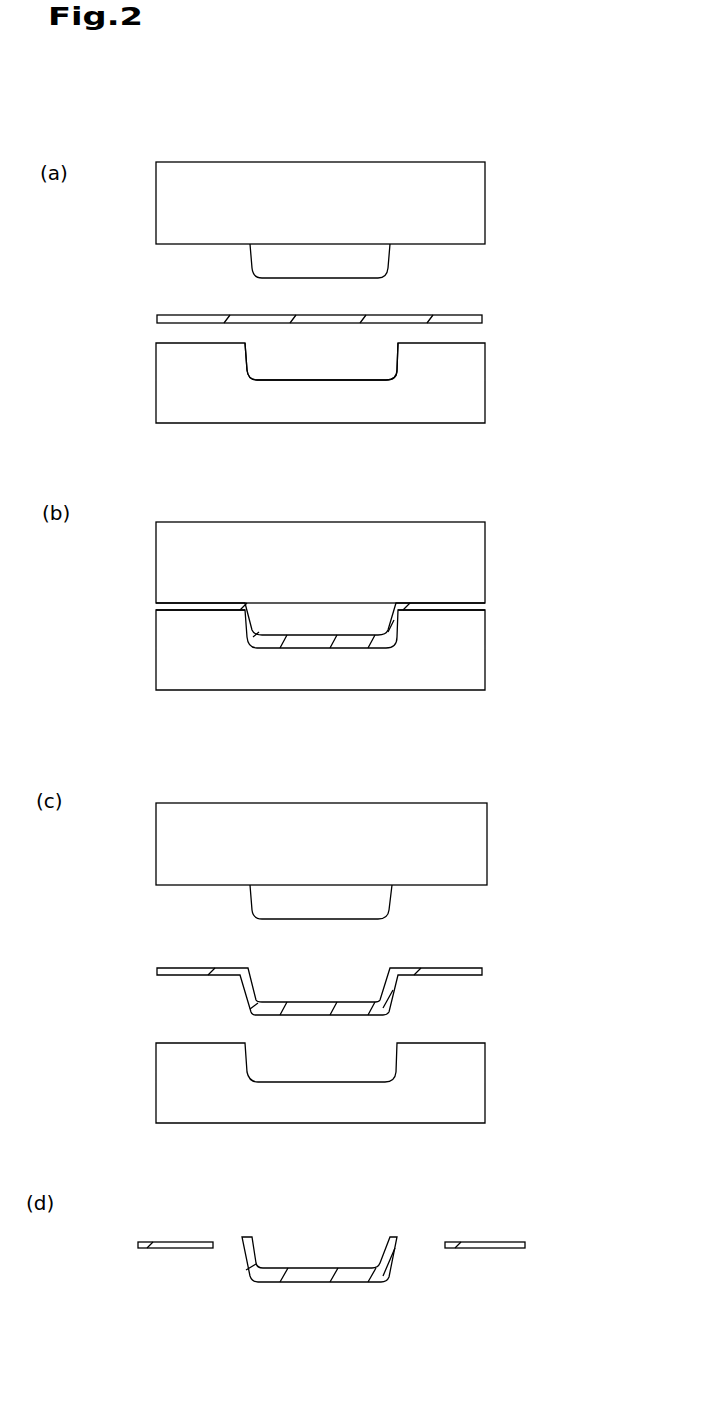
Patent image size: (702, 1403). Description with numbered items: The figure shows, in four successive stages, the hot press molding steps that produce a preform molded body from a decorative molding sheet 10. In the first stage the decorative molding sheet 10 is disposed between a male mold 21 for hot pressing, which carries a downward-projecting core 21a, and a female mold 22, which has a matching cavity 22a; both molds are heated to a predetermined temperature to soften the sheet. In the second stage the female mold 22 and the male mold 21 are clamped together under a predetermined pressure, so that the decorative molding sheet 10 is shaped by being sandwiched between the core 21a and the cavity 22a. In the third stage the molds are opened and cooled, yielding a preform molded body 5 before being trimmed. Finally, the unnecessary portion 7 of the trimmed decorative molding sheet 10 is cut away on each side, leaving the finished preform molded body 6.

The male mold 21 is at (485, 170).
The core 21a is at (390, 257).
The decorative molding sheet 10 is at (482, 318).
The female mold 22 is at (480, 402).
The cavity 22a is at (253, 350).
The preform molded body before being trimmed 5 is at (482, 972).
The preform molded body 6 is at (393, 1237).
The unnecessary portion 7 is at (520, 1245).